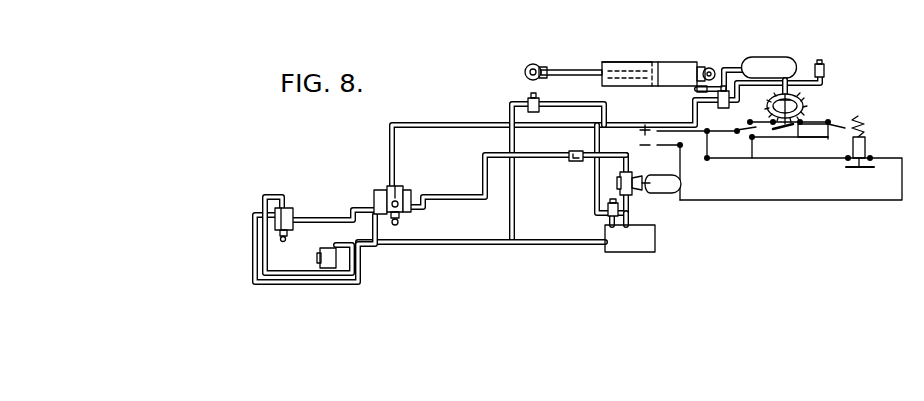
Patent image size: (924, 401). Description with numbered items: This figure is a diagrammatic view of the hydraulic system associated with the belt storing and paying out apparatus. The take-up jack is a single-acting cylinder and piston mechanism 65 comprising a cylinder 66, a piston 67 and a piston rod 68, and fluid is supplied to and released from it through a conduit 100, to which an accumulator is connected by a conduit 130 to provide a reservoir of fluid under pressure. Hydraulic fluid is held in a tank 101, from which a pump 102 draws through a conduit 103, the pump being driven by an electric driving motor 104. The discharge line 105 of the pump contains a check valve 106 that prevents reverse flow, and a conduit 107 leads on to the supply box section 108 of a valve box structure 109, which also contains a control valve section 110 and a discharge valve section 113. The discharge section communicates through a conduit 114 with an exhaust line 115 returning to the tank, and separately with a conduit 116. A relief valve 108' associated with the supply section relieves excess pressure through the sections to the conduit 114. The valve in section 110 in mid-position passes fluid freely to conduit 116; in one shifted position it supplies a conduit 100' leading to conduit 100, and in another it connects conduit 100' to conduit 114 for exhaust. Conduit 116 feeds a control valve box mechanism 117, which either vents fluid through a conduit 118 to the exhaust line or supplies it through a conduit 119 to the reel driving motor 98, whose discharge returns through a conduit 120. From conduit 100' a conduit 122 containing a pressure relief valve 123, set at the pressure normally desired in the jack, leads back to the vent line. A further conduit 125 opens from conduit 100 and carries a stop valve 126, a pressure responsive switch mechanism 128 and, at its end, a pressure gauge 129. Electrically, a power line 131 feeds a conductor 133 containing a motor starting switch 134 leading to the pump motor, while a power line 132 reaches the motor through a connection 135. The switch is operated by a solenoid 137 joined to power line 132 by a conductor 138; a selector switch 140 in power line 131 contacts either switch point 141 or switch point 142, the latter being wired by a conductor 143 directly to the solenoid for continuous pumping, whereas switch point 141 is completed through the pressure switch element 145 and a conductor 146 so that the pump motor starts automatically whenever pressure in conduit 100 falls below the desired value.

The cylinder and piston mechanism 65 is at (683, 57).
The cylinder 66 is at (617, 61).
The piston 67 is at (649, 61).
The piston rod 68 is at (570, 69).
The motor 98 is at (320, 258).
The conduit 100 is at (682, 83).
The conduit 100' is at (606, 131).
The tank 101 is at (640, 250).
The pump 102 is at (634, 190).
The conduit 103 is at (621, 211).
The electric driving motor 104 is at (674, 182).
The discharge line 105 is at (611, 153).
The check valve 106 is at (569, 155).
The conduit 107 is at (483, 160).
The supply box section 108 is at (425, 187).
The relief valve 108' is at (426, 221).
The valve box structure 109 is at (389, 184).
The control valve section 110 is at (398, 194).
The discharge valve section 113 is at (376, 196).
The conduit 114 is at (362, 205).
The exhaust line 115 is at (426, 245).
The conduit 116 is at (310, 217).
The control valve box mechanism 117 is at (286, 207).
The conduit 118 is at (254, 234).
The conduit 119 is at (269, 258).
The conduit 120 is at (344, 246).
The conduit 122 is at (584, 104).
The pressure relief valve 123 is at (528, 101).
The conduit 125 is at (700, 101).
The stop valve 126 is at (722, 87).
The pressure responsive switch mechanism 128 is at (792, 95).
The pressure gauge 129 is at (825, 70).
The conduit 130 is at (737, 68).
The power line 131 is at (660, 130).
The power line 132 is at (655, 146).
The conductor 133 is at (797, 160).
The motor starting switch 134 is at (862, 170).
The connection 135 is at (684, 152).
The operating solenoid 137 is at (866, 128).
The conductor 138 is at (776, 148).
The selector switch 140 is at (730, 144).
The switch point 141 is at (750, 120).
The switch point 142 is at (753, 160).
The conductor 143 is at (835, 126).
The switch element 145 is at (796, 131).
The conductor 146 is at (822, 123).